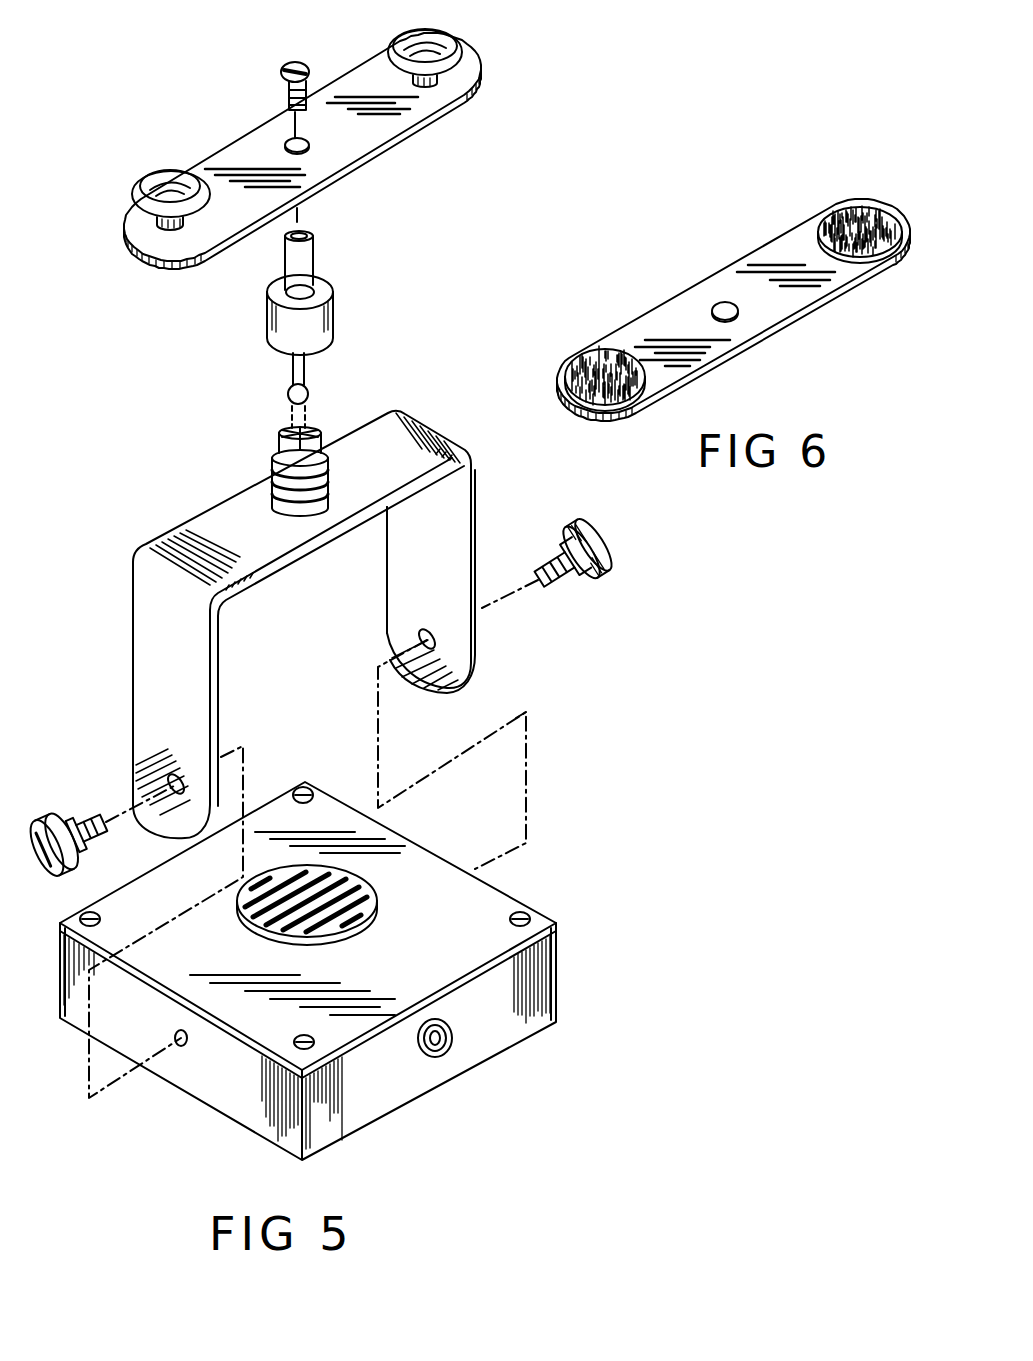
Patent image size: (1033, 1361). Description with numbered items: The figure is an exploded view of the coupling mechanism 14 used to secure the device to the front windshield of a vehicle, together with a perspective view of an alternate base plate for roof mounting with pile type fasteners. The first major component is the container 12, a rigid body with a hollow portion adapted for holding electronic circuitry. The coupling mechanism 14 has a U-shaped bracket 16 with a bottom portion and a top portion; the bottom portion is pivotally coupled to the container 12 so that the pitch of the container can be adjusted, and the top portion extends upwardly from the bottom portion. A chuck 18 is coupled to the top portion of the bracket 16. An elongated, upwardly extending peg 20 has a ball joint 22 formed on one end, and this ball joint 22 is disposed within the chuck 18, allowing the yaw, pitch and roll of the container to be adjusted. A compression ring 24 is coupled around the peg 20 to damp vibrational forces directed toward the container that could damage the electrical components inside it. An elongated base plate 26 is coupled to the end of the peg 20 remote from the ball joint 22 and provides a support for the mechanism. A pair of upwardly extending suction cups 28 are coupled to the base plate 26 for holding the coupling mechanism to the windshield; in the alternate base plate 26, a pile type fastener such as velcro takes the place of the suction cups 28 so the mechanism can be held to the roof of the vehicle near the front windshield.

In FIG. 5, the container 12 is at (471, 901).
In FIG. 5, the coupling mechanism 14 is at (125, 86).
In FIG. 5, the U-shaped bracket 16 is at (451, 619).
In FIG. 5, the chuck 18 is at (325, 477).
In FIG. 5, the peg 20 is at (286, 257).
In FIG. 5, the ball joint 22 is at (290, 400).
In FIG. 5, the compression ring 24 is at (293, 334).
In FIG. 5, the base plate 26 is at (277, 128).
In FIG. 6, the base plate 26 is at (742, 352).
In FIG. 5, the suction cups 28 is at (462, 52).